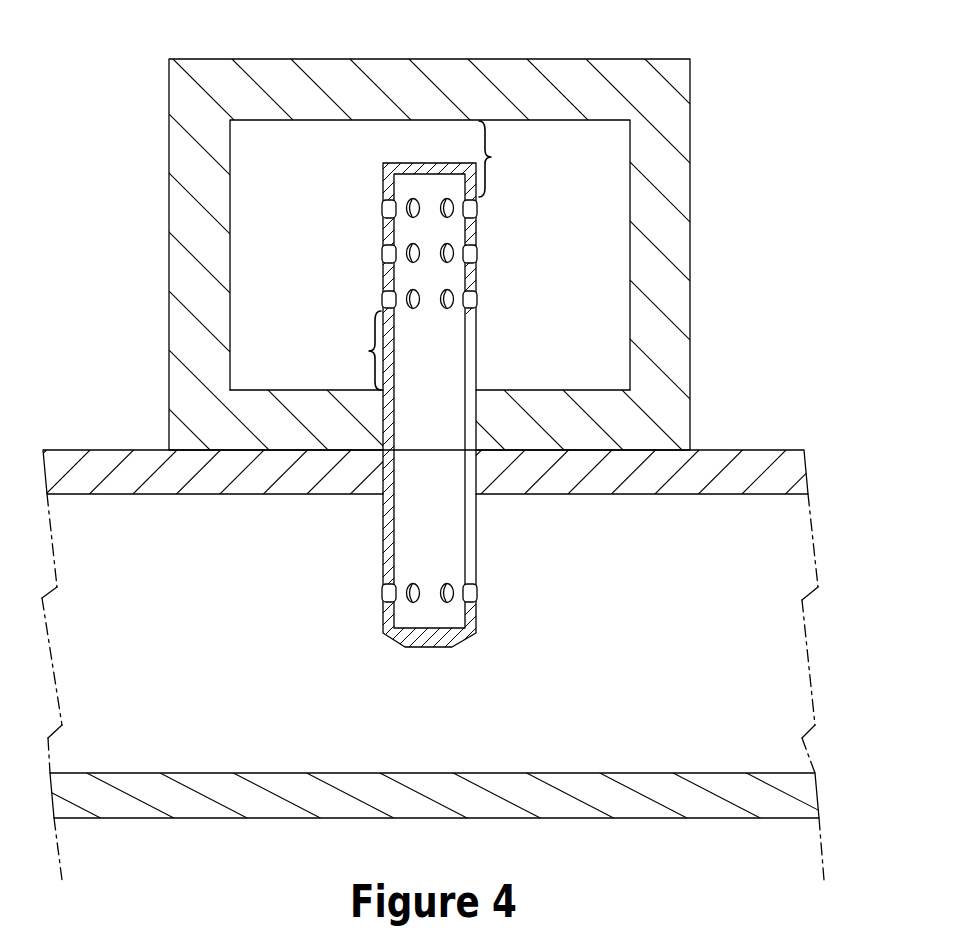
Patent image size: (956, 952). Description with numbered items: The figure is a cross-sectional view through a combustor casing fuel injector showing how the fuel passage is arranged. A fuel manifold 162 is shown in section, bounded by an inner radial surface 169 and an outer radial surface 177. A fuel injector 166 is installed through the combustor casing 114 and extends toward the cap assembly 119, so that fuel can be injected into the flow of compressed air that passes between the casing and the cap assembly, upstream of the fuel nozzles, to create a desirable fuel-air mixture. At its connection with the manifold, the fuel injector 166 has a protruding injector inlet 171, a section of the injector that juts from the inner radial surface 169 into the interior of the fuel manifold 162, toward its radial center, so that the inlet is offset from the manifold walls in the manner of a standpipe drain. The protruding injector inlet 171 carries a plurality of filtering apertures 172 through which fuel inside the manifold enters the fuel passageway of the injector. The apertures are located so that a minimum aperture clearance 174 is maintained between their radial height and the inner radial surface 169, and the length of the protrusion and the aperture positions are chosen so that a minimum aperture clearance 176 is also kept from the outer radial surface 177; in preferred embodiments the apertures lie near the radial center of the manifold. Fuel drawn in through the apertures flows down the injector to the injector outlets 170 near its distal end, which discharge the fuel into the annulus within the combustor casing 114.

The combustor casing 114 is at (115, 473).
The cap assembly 119 is at (654, 792).
The fuel manifold 162 is at (310, 202).
The fuel injector 166 is at (506, 523).
The inner radial surface 169 is at (577, 391).
The injector outlets 170 is at (387, 597).
The protruding injector inlet 171 is at (528, 240).
The filtering apertures 172 is at (418, 207).
The minimum aperture clearance 174 is at (369, 351).
The minimum aperture clearance 176 is at (491, 157).
The outer radial surface 177 is at (336, 121).